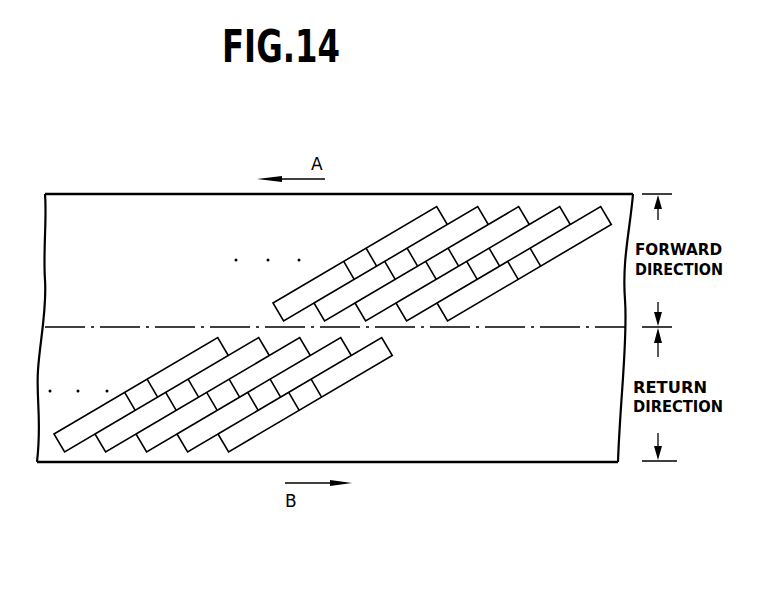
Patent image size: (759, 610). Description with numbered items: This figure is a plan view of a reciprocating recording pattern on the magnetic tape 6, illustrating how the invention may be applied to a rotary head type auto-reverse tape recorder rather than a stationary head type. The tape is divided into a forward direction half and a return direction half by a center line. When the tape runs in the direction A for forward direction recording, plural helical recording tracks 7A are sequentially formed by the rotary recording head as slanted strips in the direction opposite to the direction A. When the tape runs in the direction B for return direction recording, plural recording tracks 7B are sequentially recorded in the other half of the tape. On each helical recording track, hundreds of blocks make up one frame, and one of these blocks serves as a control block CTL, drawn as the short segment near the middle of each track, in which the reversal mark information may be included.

The magnetic tape 6 is at (50, 463).
The helical recording tracks 7A is at (462, 227).
The recording tracks 7B is at (110, 436).
The control block CTL is at (527, 272).